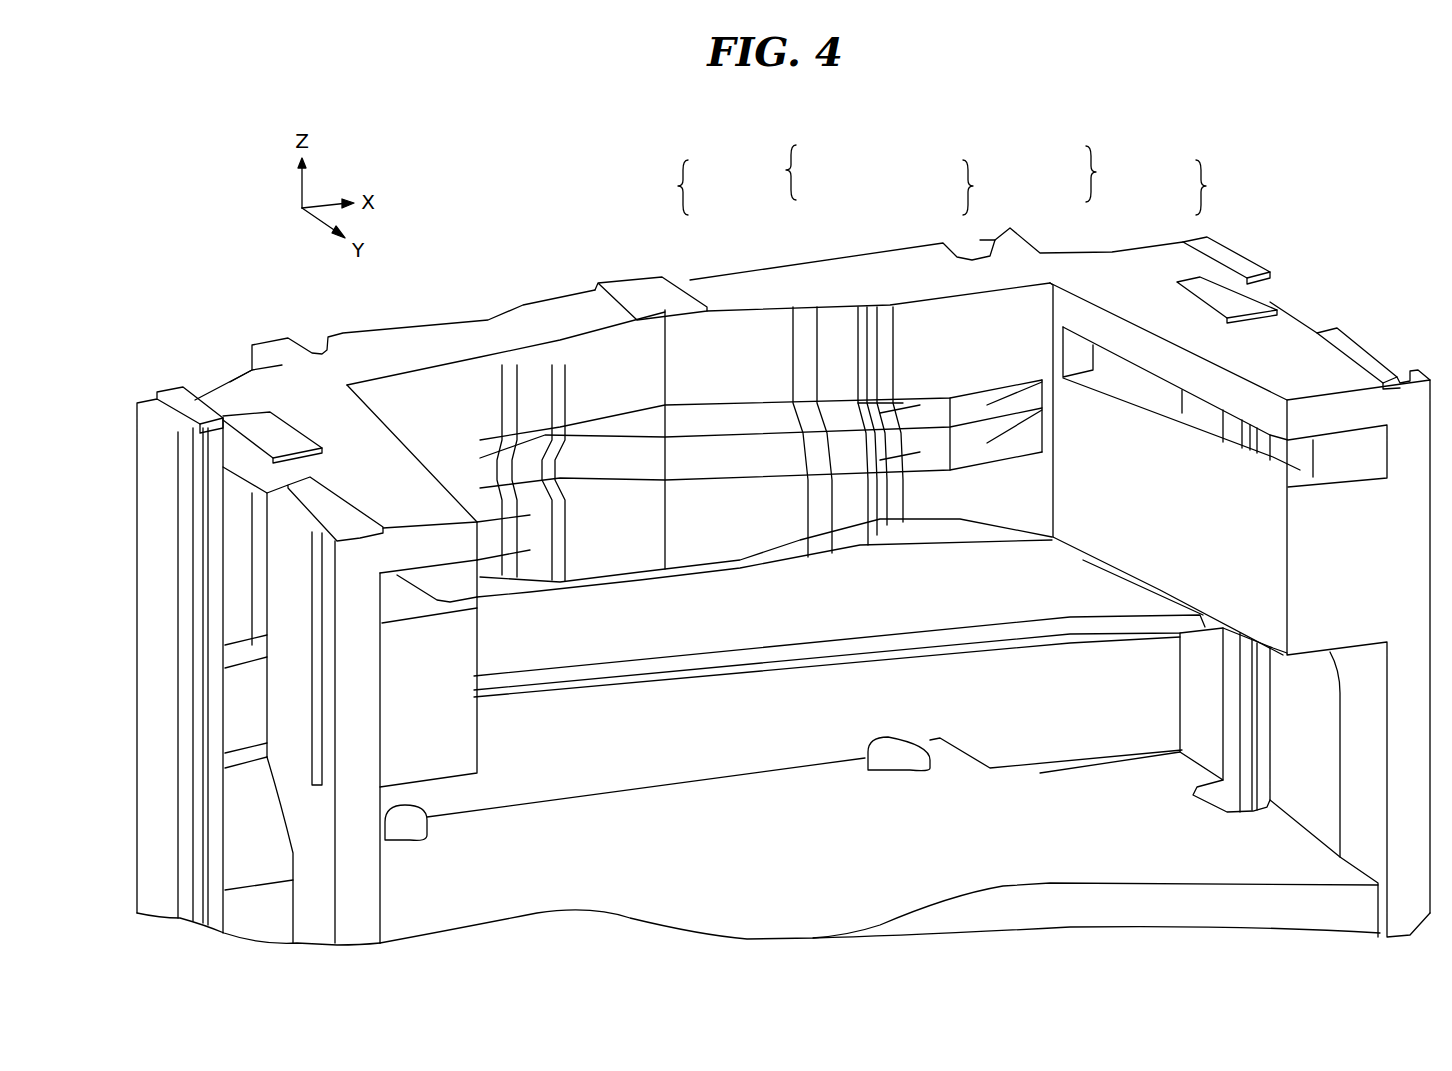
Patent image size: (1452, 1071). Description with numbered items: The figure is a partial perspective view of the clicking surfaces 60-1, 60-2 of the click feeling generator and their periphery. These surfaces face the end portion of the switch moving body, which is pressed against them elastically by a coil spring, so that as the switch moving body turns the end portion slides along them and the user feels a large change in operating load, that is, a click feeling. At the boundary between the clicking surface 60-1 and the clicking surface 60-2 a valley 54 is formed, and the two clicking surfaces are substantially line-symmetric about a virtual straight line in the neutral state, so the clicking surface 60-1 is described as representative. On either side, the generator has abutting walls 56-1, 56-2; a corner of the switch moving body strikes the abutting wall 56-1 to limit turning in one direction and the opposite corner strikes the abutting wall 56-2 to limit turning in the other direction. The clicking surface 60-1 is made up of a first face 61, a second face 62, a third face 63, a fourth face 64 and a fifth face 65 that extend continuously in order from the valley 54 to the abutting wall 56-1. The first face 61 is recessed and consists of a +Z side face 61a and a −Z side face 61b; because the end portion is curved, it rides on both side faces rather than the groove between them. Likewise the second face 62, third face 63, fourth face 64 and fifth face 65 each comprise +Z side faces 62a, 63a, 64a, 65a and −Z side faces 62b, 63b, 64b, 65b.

The valley 54 is at (673, 330).
The abutting wall 56-1 is at (1180, 483).
The abutting wall 56-2 is at (470, 567).
The clicking surface 60-1 is at (657, 140).
The clicking surface 60-2 is at (548, 427).
The first face 61 is at (588, 374).
The +Z side face 61a is at (725, 460).
The −Z side face 61b is at (735, 423).
The second face 62 is at (784, 355).
The +Z side face 62a is at (800, 420).
The −Z side face 62b is at (793, 452).
The third face 63 is at (932, 287).
The +Z side face 63a is at (835, 417).
The −Z side face 63b is at (840, 457).
The fourth face 64 is at (1039, 311).
The +Z side face 64a is at (880, 413).
The −Z side face 64b is at (880, 460).
The fifth face 65 is at (1141, 312).
The +Z side face 65a is at (987, 405).
The −Z side face 65b is at (987, 443).